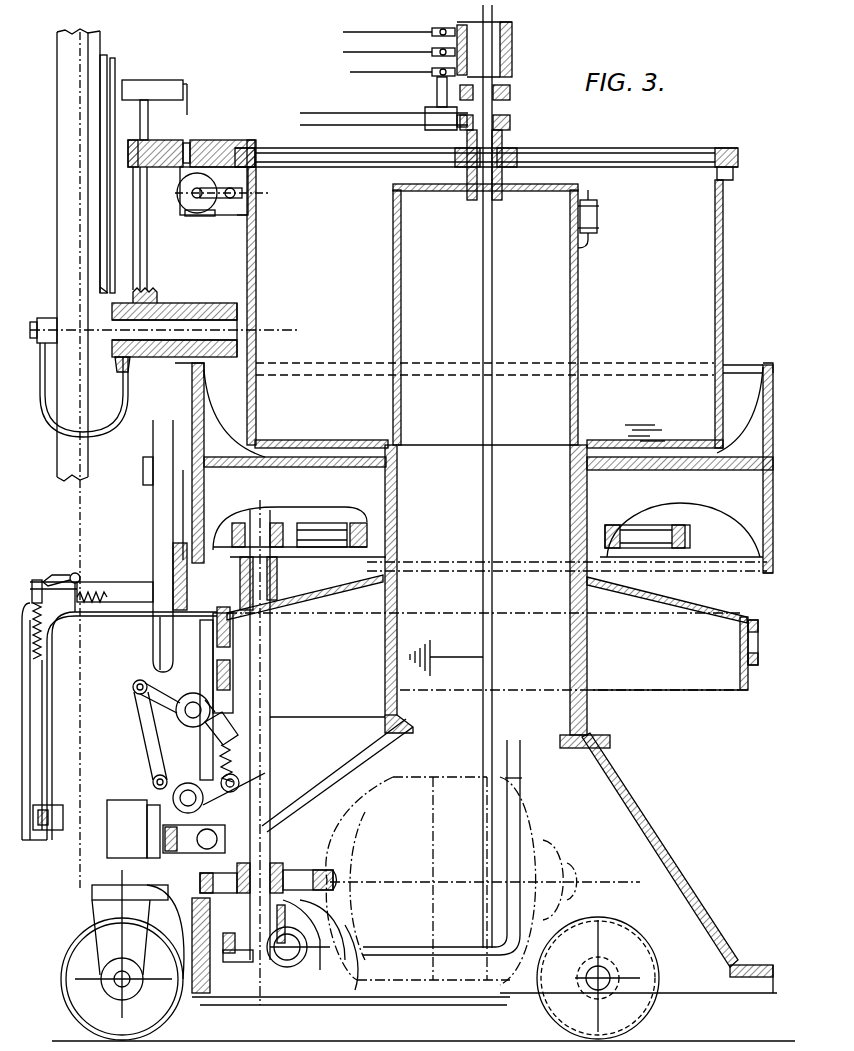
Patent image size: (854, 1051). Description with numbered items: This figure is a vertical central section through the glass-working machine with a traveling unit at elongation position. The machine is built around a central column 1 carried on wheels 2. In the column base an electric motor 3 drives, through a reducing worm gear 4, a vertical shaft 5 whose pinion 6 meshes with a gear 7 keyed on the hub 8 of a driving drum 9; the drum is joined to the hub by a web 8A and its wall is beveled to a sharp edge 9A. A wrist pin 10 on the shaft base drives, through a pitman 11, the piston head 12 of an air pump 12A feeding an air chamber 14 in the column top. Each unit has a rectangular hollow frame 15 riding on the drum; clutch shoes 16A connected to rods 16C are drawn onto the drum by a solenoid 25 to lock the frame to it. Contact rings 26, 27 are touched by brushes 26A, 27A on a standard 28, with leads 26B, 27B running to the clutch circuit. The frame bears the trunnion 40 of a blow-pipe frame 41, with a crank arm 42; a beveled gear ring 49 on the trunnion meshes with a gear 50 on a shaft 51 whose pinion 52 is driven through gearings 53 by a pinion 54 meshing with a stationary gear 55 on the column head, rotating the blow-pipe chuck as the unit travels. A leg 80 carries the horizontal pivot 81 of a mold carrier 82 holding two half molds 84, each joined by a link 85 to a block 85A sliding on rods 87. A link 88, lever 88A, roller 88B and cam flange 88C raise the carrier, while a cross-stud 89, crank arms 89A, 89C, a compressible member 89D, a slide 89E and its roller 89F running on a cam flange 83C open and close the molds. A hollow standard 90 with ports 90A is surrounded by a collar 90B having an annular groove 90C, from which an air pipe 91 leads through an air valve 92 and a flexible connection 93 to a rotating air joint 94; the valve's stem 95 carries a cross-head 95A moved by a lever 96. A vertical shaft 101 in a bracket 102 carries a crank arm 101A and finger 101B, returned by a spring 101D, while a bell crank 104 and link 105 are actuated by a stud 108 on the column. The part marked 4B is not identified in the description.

The central column 1 is at (385, 672).
The carrying wheels 2 is at (236, 165).
The electric motor 3 is at (372, 832).
The reducing worm gear 4 is at (290, 872).
The vertical shaft 5 is at (240, 773).
The pinion 6 is at (272, 525).
The gear 7 is at (318, 540).
The hub 8 is at (372, 490).
The web 8A is at (722, 470).
The driving drum 9 is at (773, 503).
The sharp edge 9A is at (768, 363).
The wrist pin 10 is at (232, 955).
The pitman 11 is at (265, 960).
The piston head 12 is at (292, 972).
The air pump 12A is at (333, 972).
The air chamber 14 is at (556, 334).
The rectangular hollow frame 15 is at (158, 437).
The clutch shoes 16A is at (192, 372).
The rods 16C is at (185, 470).
The solenoid 25 is at (150, 543).
The contact ring 26 is at (513, 27).
The brush 26A is at (433, 29).
The lead 26B is at (378, 32).
The contact ring 27 is at (513, 50).
The brush 27A is at (432, 56).
The lead 27B is at (380, 52).
The standard 28 is at (432, 46).
The trunnion 40 is at (196, 330).
The blow-pipe frame 41 is at (64, 282).
The crank arm 42 is at (238, 312).
The post part 4B is at (100, 287).
The double-faced beveled gear ring 49 is at (120, 360).
The gear 50 is at (160, 296).
The shaft 51 is at (244, 256).
The pinion 52 is at (130, 165).
The gearings 53 is at (180, 148).
The pinion 54 is at (215, 165).
The stationary gear 55 is at (316, 168).
The leg 80 is at (165, 633).
The horizontal pivot 81 is at (345, 762).
The mold carrier 82 is at (236, 745).
The flange 83C is at (740, 672).
The half molds 84 is at (140, 830).
The link 85 is at (175, 846).
The block 85A is at (270, 820).
The rods 87 is at (195, 853).
The link 88 is at (150, 730).
The lever 88A is at (162, 690).
The roller 88B is at (236, 690).
The cam flange 88C is at (298, 716).
The cross-stud 89 is at (258, 852).
The crank arm 89A is at (185, 815).
The crank arm 89C is at (250, 762).
The compressible member 89D is at (272, 740).
The slide 89E is at (235, 633).
The roller 89F is at (258, 642).
The hollow standard 90 is at (490, 150).
The ports 90A is at (511, 95).
The collar 90B is at (460, 97).
The annular groove 90C is at (465, 122).
The air pipe 91 is at (316, 120).
The air valve 92 is at (200, 212).
The flexible connection 93 is at (65, 427).
The rotating air joint 94 is at (45, 320).
The rotating stem 95 is at (198, 190).
The cross-head 95A is at (214, 200).
The lever 96 is at (232, 198).
The vertical shaft 101 is at (36, 762).
The crank arm 101A is at (48, 808).
The finger 101B is at (38, 580).
The spring 101D is at (42, 652).
The bracket 102 is at (125, 585).
The bell crank 104 is at (76, 573).
The link 105 is at (108, 617).
The stud 108 is at (245, 607).